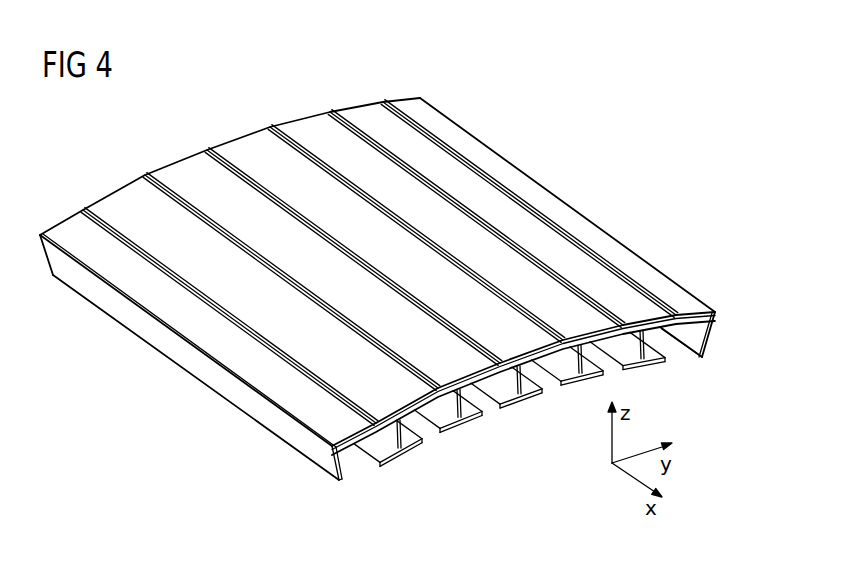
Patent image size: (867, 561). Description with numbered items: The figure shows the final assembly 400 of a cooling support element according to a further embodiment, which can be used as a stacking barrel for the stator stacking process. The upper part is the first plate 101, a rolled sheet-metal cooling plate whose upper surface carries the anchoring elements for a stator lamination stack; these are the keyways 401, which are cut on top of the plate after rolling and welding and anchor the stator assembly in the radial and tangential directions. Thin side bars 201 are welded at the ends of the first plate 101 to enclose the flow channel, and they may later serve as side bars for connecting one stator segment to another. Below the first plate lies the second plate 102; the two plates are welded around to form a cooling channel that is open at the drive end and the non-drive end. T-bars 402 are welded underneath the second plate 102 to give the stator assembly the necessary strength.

The final assembly 400 is at (606, 194).
The keyways 401 is at (144, 176).
The T-bars 402 is at (455, 430).
The first plate 101 is at (705, 310).
The second plate 102 is at (693, 329).
The side bars 201 is at (135, 323).